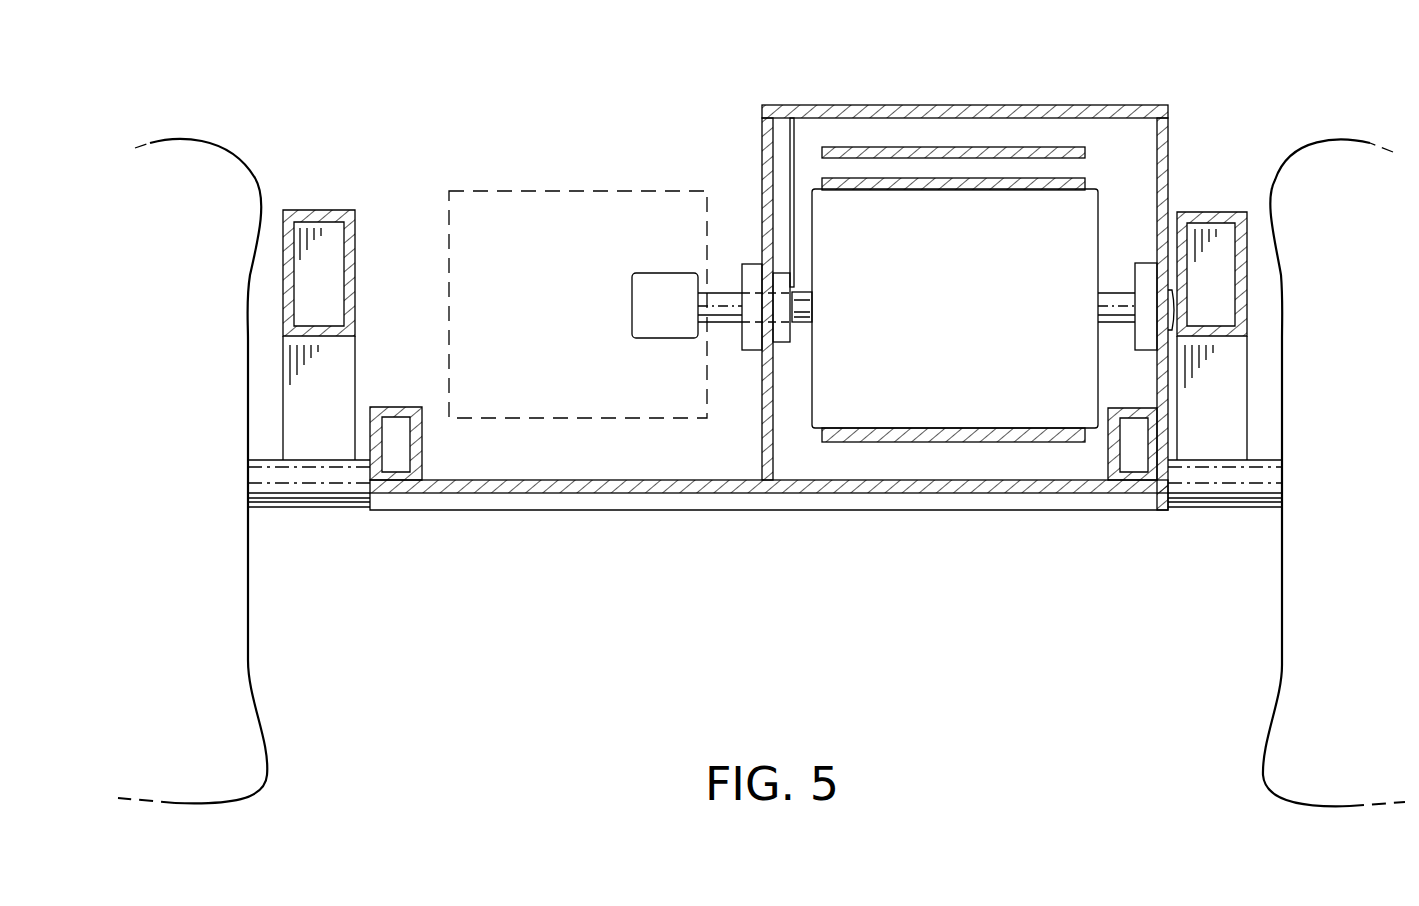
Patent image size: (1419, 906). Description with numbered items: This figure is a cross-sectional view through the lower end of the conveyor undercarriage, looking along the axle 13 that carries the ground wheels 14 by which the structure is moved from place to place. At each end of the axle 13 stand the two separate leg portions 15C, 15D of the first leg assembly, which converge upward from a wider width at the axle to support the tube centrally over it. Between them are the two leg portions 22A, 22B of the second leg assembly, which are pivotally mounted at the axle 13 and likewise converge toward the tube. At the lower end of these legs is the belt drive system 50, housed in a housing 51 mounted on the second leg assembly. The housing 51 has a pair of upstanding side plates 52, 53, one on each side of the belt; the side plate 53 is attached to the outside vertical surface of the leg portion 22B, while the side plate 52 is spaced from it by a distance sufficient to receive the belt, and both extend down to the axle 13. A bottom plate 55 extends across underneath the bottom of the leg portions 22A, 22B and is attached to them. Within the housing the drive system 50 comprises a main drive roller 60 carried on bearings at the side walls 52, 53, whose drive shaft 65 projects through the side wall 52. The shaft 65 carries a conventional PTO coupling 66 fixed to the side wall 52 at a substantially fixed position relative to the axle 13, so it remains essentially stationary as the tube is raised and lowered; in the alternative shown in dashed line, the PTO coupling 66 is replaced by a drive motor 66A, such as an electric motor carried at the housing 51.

The axle 13 is at (328, 490).
The ground wheels 14 is at (240, 657).
The leg portion 15C is at (318, 200).
The leg portion 15D is at (1205, 205).
The leg portion 22A is at (426, 440).
The leg portion 22B is at (1104, 458).
The belt drive system 50 is at (1003, 138).
The housing 51 is at (904, 104).
The side plate 52 is at (757, 143).
The side plate 53 is at (1170, 143).
The bottom plate 55 is at (727, 497).
The main drive roller 60 is at (1068, 268).
The drive shaft 65 is at (799, 290).
The PTO coupling 66 is at (650, 271).
The drive motor 66A is at (566, 188).